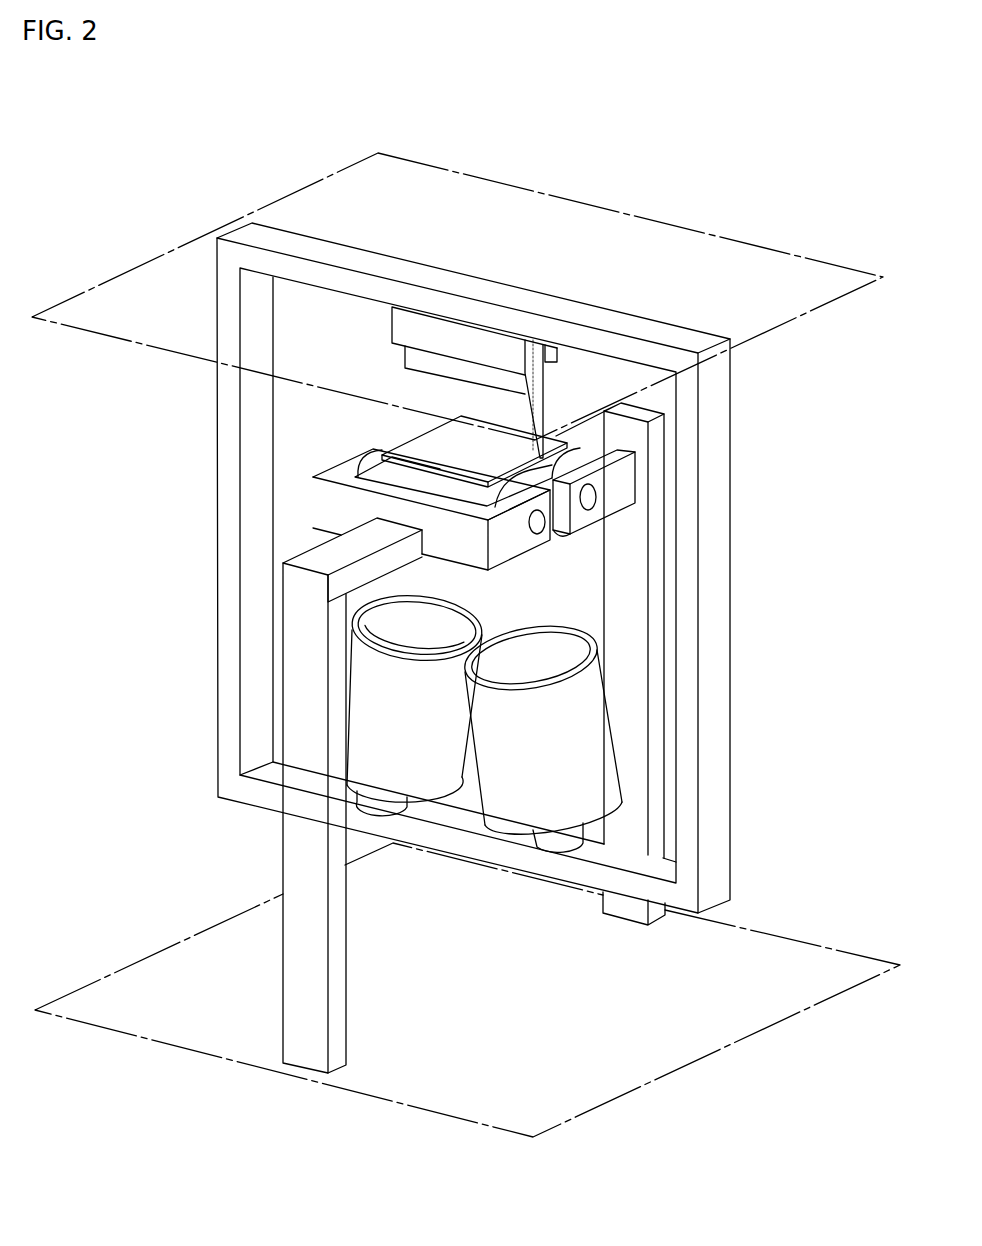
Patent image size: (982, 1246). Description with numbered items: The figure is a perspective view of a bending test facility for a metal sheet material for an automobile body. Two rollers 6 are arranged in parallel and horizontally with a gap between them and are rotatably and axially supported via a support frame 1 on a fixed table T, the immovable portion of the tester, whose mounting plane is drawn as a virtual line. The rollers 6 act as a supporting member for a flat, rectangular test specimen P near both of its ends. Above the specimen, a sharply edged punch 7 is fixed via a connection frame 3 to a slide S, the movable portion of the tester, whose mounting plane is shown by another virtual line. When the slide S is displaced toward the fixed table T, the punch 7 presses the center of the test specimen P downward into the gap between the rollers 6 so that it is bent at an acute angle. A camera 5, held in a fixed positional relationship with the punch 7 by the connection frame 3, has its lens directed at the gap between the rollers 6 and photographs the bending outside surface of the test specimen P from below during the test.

The support frame 1 is at (627, 574).
The connection frame 3 is at (718, 438).
The camera 5 is at (443, 604).
The rollers 6 is at (383, 469).
The punch 7 is at (470, 446).
The test specimen P is at (415, 454).
The slide S is at (800, 270).
The fixed table T is at (787, 950).